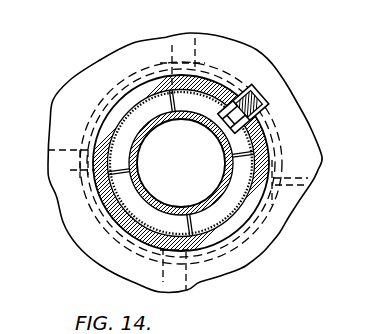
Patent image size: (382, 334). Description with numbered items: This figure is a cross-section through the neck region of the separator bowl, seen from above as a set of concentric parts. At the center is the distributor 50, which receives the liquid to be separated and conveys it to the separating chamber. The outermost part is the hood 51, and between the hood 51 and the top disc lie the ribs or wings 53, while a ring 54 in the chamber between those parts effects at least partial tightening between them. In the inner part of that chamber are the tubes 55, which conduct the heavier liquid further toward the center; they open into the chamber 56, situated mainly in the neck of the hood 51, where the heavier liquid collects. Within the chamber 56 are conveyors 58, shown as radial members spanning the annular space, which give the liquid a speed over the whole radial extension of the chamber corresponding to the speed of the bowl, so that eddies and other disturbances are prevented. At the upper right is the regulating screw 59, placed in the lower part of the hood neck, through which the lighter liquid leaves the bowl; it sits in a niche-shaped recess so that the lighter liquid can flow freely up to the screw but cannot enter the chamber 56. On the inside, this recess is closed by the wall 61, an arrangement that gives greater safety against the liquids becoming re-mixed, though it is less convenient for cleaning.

The distributor 50 is at (139, 147).
The hood 51 is at (103, 203).
The ribs or wings 53 is at (50, 130).
The ring 54 is at (287, 230).
The tubes 55 is at (162, 62).
The chamber 56 is at (128, 125).
The conveyors 58 is at (132, 83).
The regulating screw 59 is at (240, 97).
The wall 61 is at (190, 126).